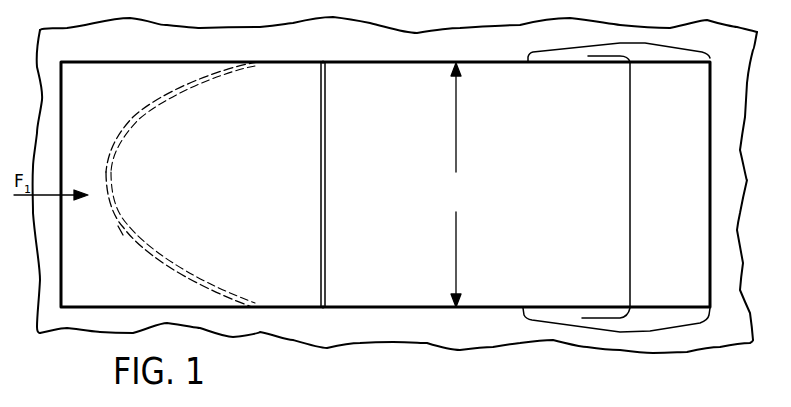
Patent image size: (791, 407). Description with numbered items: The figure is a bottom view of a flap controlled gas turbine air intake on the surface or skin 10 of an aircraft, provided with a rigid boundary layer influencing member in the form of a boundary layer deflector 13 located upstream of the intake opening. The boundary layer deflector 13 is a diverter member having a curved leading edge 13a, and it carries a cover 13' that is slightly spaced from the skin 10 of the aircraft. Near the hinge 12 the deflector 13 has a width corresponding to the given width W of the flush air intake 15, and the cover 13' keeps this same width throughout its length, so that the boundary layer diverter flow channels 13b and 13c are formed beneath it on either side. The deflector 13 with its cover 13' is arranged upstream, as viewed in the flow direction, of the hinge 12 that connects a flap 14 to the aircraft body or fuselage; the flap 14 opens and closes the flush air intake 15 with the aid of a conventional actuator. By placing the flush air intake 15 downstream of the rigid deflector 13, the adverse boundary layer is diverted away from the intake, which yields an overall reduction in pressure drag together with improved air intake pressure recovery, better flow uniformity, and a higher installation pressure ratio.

The aircraft surface or skin 10 is at (60, 333).
The hinge 12 is at (323, 297).
The boundary layer deflector 13 is at (181, 223).
The cover 13' is at (192, 169).
The curved leading edge 13a is at (120, 229).
The boundary layer diverter flow channel 13b is at (178, 72).
The boundary layer diverter flow channel 13c is at (146, 282).
The flap 14 is at (432, 292).
The flush air intake 15 is at (629, 248).